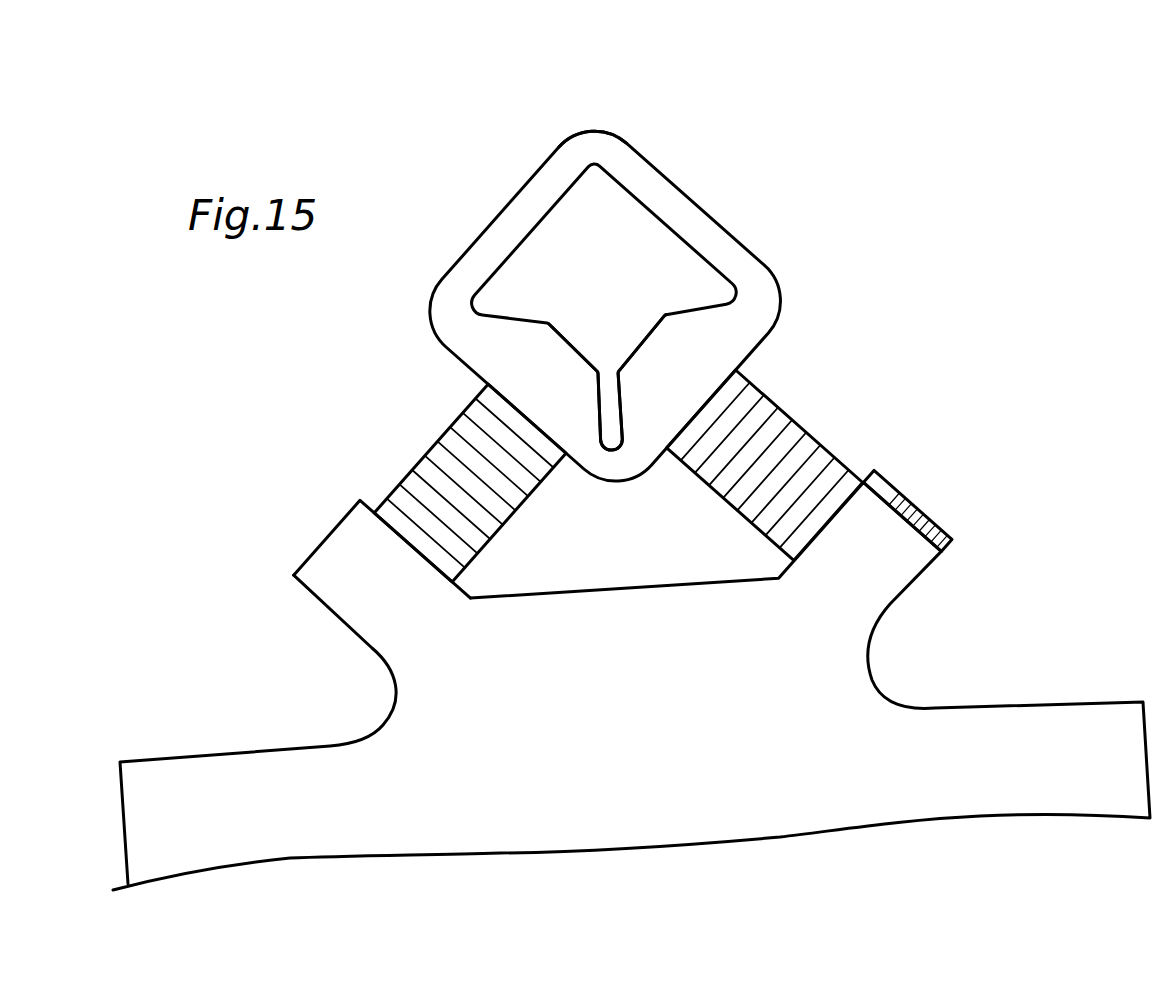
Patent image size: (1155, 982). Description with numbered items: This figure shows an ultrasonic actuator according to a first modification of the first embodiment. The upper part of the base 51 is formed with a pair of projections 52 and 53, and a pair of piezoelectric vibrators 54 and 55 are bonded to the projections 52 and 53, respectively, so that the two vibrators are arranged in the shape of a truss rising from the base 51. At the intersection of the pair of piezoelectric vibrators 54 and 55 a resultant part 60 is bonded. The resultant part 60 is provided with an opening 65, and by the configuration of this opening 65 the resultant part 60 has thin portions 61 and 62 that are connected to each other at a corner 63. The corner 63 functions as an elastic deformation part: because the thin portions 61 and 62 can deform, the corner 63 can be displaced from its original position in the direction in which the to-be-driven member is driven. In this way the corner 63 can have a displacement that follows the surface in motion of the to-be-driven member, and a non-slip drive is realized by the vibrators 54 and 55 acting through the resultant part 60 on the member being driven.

The base 51 is at (987, 737).
The projection 52 is at (917, 517).
The projection 53 is at (348, 558).
The piezoelectric vibrator 54 is at (782, 418).
The piezoelectric vibrator 55 is at (430, 450).
The resultant part 60 is at (641, 268).
The thin portion 61 is at (518, 222).
The thin portion 62 is at (665, 202).
The corner 63 is at (600, 147).
The opening 65 is at (667, 274).